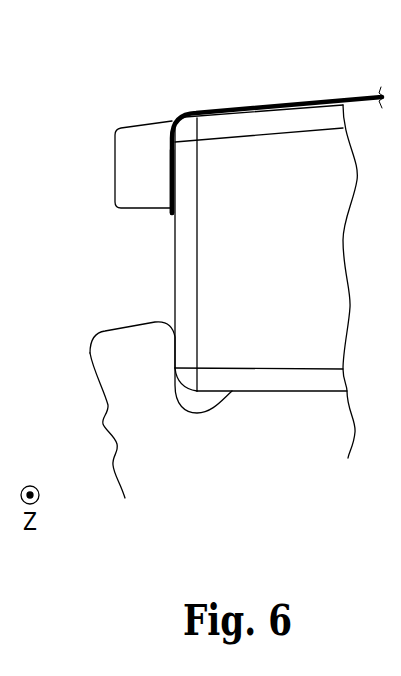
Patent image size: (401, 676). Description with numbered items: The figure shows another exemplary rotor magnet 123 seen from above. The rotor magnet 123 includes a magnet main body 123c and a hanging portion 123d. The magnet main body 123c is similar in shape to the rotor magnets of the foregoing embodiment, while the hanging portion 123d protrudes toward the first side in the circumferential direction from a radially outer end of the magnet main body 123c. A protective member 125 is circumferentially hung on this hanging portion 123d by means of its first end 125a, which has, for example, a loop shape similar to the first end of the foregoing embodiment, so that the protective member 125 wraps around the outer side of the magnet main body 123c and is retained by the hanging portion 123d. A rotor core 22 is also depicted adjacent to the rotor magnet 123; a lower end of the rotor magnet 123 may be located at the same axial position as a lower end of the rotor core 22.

The rotor core 22 is at (97, 330).
The rotor magnet 123 is at (289, 391).
The magnet main body 123c is at (257, 158).
The hanging portion 123d is at (147, 147).
The protective member 125 is at (328, 98).
The first end 125a is at (172, 177).